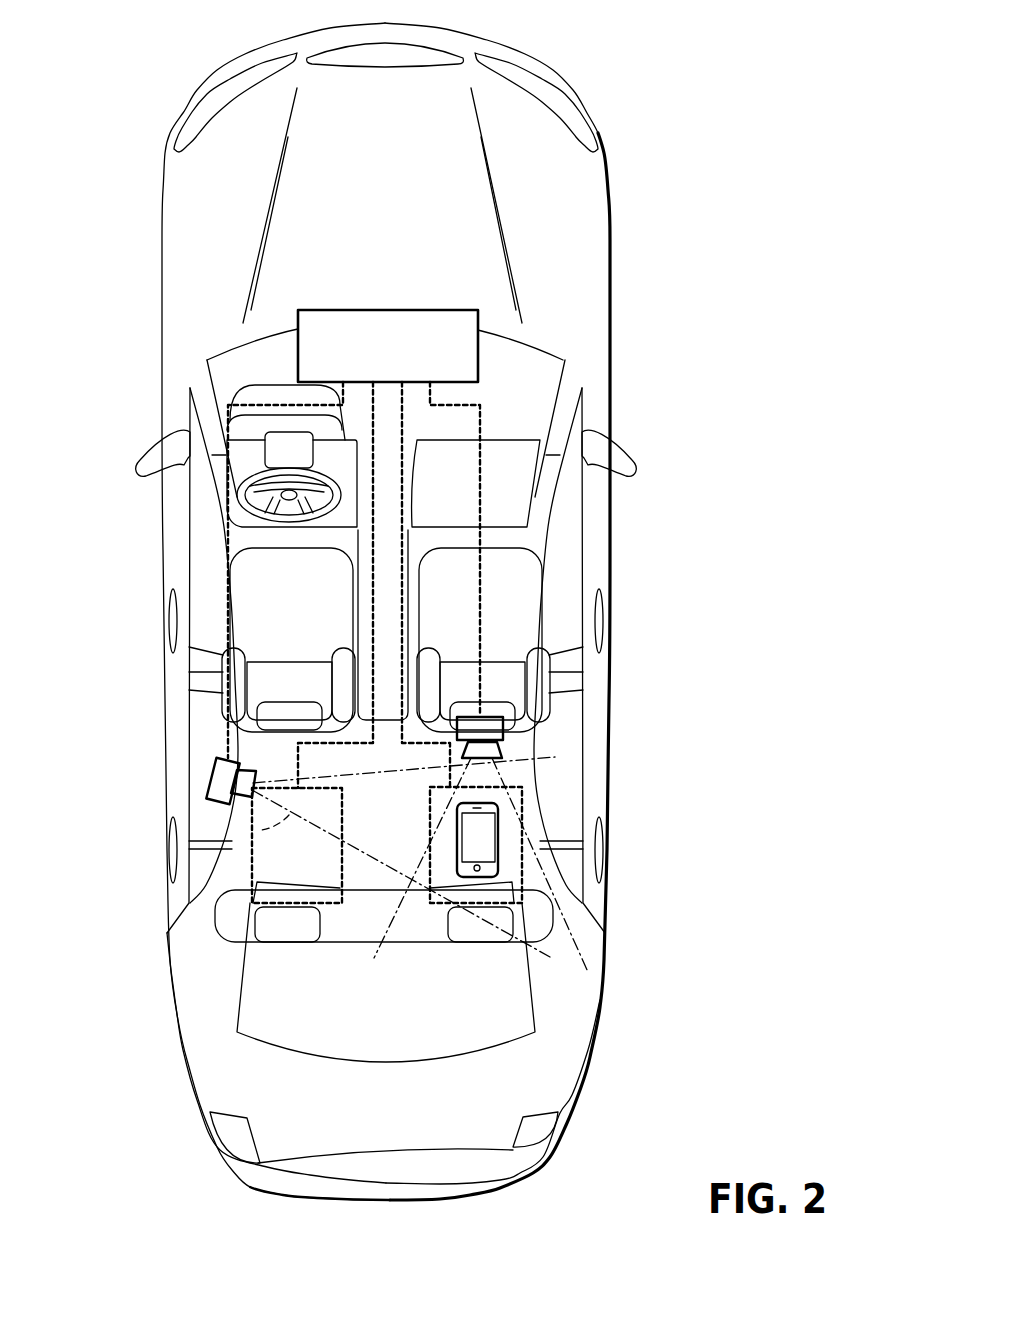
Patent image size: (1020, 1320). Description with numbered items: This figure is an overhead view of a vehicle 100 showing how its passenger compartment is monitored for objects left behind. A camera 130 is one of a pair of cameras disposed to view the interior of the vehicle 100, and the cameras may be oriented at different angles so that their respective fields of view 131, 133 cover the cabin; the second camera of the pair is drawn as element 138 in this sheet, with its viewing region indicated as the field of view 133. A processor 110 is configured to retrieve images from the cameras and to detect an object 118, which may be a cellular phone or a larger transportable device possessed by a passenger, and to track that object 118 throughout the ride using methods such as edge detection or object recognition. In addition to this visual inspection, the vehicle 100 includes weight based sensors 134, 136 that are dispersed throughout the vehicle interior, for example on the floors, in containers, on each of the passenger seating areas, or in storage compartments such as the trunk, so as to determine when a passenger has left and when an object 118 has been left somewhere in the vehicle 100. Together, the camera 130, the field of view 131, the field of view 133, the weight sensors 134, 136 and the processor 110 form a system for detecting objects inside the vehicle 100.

The vehicle 100 is at (150, 793).
The processor 110 is at (368, 310).
The object 118 is at (498, 847).
The camera 130 is at (212, 780).
The field of view 131 is at (270, 833).
The field of view 133 is at (588, 960).
The weight based sensor 134 is at (522, 812).
The weight based sensor 136 is at (245, 866).
The camera 138 is at (500, 716).